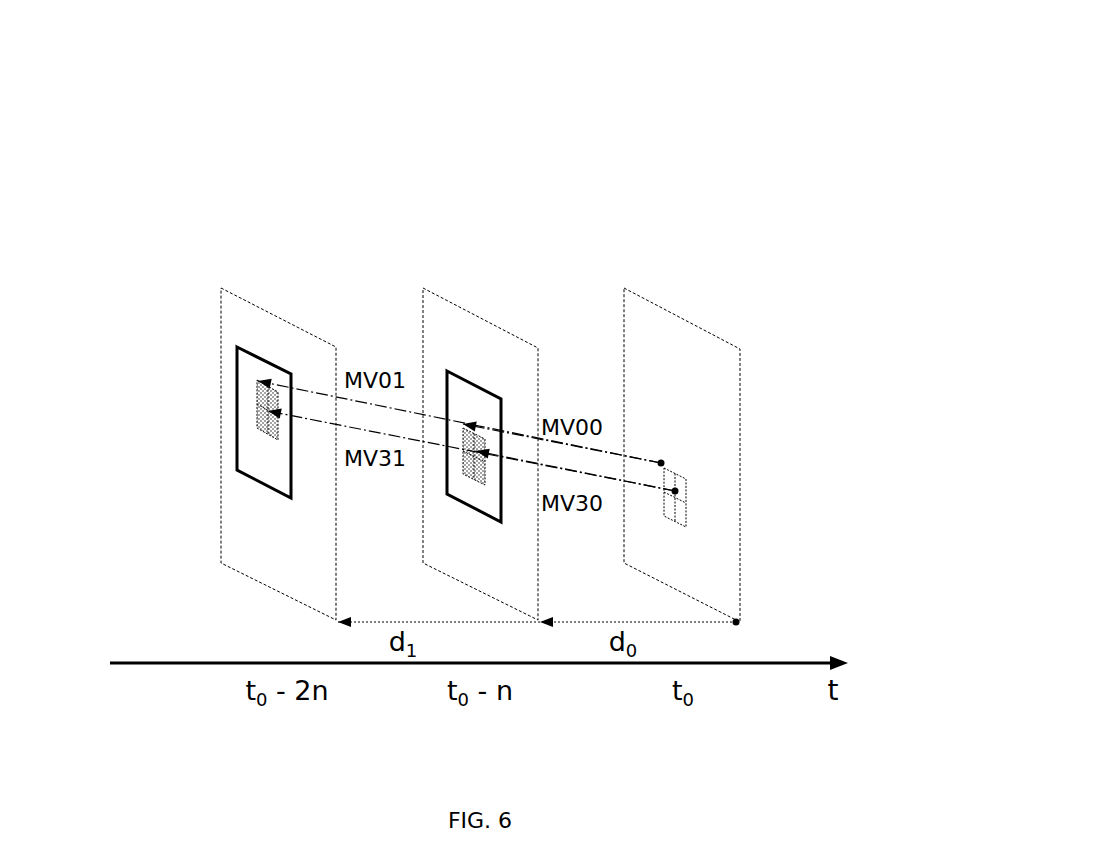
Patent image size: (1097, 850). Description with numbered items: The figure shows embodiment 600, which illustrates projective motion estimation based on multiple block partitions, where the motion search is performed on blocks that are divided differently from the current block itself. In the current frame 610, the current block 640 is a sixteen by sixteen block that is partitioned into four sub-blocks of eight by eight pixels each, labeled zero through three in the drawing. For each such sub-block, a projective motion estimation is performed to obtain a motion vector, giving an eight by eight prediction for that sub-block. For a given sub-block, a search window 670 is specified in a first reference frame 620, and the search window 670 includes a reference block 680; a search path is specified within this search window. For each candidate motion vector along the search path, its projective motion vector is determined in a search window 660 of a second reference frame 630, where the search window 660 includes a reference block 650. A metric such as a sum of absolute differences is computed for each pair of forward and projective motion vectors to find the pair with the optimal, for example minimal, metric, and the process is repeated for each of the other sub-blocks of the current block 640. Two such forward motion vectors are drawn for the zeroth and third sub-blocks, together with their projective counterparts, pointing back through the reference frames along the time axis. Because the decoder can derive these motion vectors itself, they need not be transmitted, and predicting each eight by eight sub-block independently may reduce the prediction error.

The embodiment 600 is at (717, 98).
The current frame 610 is at (716, 338).
The first reference frame 620 is at (487, 327).
The second reference frame 630 is at (293, 327).
The current block 640 is at (684, 467).
The reference block 650 is at (252, 414).
The search window 660 is at (253, 485).
The search window 670 is at (503, 510).
The reference block 680 is at (463, 469).